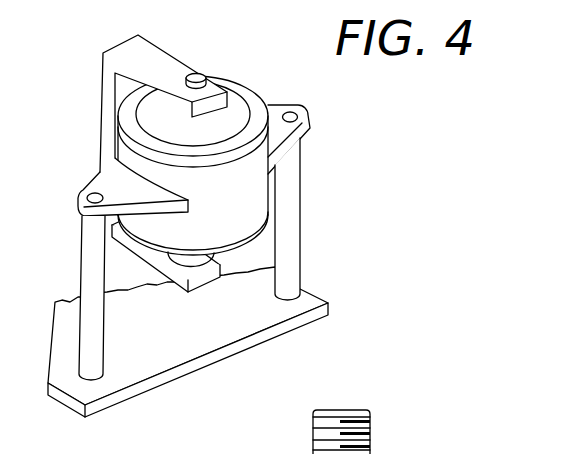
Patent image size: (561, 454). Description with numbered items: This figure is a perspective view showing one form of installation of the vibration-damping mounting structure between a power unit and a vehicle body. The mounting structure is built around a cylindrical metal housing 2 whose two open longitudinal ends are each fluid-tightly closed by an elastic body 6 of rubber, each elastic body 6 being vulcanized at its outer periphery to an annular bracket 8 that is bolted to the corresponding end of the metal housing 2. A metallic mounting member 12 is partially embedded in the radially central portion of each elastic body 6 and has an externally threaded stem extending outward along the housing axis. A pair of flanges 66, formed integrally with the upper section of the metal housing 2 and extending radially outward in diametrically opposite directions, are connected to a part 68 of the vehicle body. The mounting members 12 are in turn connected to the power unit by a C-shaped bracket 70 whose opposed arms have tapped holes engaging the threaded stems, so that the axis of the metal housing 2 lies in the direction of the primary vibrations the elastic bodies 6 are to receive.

The metal housing 2 is at (203, 201).
The elastic body 6 is at (237, 108).
The annular bracket 8 is at (160, 250).
The mounting member 12 is at (196, 74).
The flange 66 is at (100, 182).
The part of the vehicle body 68 is at (227, 332).
The C-shaped bracket 70 is at (103, 82).